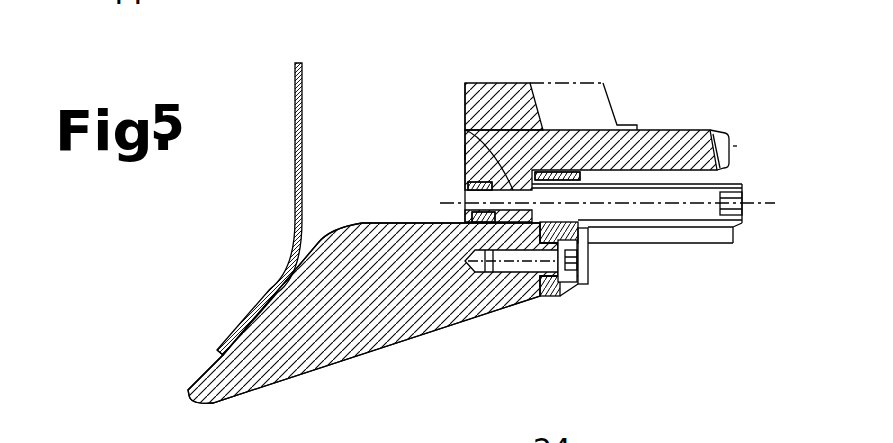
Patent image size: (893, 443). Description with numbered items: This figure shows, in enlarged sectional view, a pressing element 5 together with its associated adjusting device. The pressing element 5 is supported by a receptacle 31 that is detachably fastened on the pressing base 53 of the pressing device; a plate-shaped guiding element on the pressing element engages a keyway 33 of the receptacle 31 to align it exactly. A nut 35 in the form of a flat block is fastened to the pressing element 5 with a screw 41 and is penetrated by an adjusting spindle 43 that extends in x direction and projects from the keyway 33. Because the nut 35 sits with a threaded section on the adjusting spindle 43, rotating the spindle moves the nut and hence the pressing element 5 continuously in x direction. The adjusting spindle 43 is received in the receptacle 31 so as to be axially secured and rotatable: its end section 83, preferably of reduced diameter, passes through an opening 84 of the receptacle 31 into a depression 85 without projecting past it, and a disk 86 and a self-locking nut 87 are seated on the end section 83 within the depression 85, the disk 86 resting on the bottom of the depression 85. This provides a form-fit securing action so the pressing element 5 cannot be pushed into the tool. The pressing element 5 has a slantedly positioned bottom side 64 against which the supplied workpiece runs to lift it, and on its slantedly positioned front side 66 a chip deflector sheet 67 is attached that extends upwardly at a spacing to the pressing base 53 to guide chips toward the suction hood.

The pressing element 5 is at (318, 327).
The receptacle 31 is at (688, 152).
The keyway 33 is at (628, 178).
The nut 35 is at (548, 296).
The screw 41 is at (560, 283).
The adjusting spindle 43 is at (673, 207).
The pressing base 53 is at (507, 107).
The bottom side 64 is at (420, 338).
The front side 66 is at (222, 355).
The chip deflector sheet 67 is at (295, 122).
The end section 83 is at (465, 130).
The opening 84 is at (510, 205).
The depression 85 is at (460, 222).
The disk 86 is at (467, 152).
The self-locking nut 87 is at (467, 187).